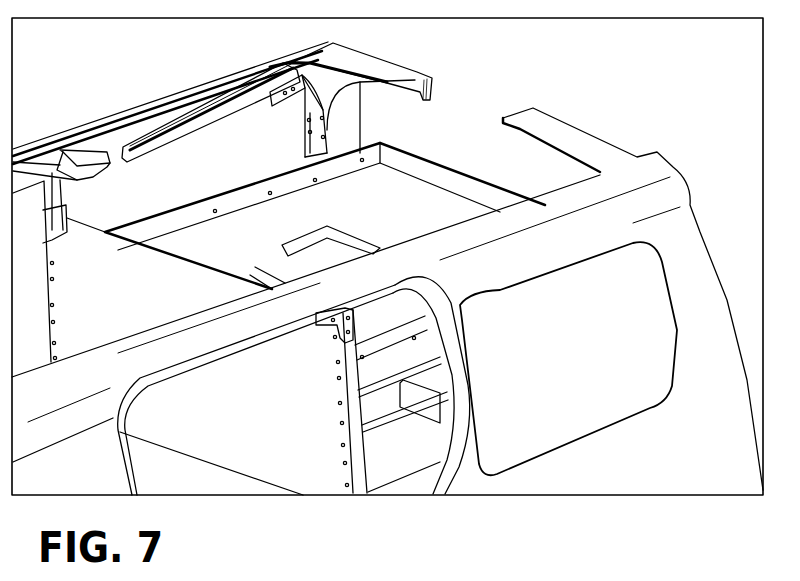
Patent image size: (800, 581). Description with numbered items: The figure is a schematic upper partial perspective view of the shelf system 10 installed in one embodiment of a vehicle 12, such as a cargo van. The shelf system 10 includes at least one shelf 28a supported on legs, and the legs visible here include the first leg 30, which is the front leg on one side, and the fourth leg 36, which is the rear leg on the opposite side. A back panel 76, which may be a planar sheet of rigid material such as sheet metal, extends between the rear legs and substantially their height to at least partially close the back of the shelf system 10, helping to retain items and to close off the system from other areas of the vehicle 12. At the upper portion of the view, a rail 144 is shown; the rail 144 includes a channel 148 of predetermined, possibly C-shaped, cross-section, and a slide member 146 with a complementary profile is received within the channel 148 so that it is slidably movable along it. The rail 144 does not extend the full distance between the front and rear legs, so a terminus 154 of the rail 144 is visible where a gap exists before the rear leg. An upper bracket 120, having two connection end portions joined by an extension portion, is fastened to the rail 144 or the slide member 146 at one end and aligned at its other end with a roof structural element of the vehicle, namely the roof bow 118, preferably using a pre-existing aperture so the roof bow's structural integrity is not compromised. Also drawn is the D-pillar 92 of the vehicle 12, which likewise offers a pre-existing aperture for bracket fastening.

The shelf system 10 is at (457, 142).
The vehicle 12 is at (673, 172).
The shelf 28a is at (433, 219).
The first leg 30 is at (330, 135).
The fourth leg 36 is at (357, 447).
The back panel 76 is at (250, 434).
The D-pillar 92 is at (350, 122).
The vehicle roof bow 118 is at (84, 153).
The upper bracket 120 is at (327, 100).
The rail 144 is at (222, 107).
The slide member 146 is at (290, 90).
The channel 148 is at (163, 137).
The terminus 154 is at (152, 160).